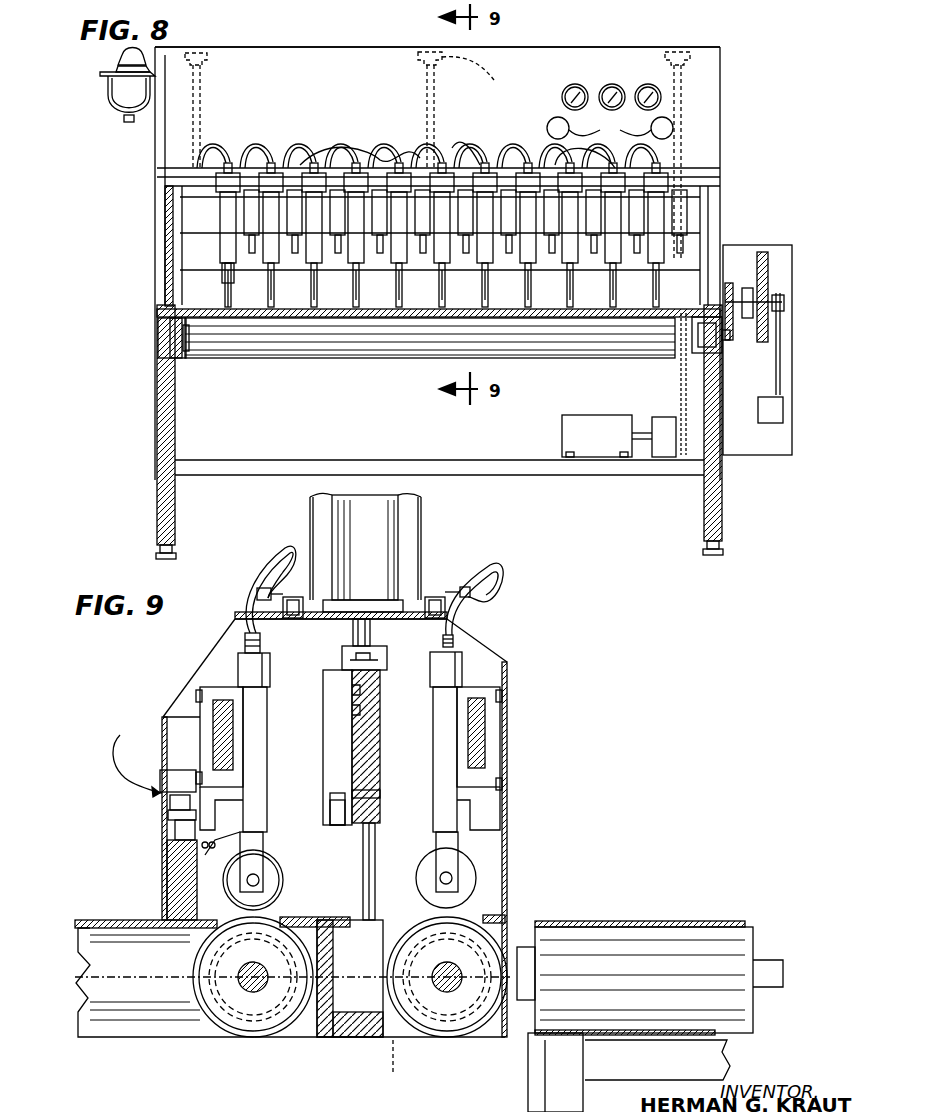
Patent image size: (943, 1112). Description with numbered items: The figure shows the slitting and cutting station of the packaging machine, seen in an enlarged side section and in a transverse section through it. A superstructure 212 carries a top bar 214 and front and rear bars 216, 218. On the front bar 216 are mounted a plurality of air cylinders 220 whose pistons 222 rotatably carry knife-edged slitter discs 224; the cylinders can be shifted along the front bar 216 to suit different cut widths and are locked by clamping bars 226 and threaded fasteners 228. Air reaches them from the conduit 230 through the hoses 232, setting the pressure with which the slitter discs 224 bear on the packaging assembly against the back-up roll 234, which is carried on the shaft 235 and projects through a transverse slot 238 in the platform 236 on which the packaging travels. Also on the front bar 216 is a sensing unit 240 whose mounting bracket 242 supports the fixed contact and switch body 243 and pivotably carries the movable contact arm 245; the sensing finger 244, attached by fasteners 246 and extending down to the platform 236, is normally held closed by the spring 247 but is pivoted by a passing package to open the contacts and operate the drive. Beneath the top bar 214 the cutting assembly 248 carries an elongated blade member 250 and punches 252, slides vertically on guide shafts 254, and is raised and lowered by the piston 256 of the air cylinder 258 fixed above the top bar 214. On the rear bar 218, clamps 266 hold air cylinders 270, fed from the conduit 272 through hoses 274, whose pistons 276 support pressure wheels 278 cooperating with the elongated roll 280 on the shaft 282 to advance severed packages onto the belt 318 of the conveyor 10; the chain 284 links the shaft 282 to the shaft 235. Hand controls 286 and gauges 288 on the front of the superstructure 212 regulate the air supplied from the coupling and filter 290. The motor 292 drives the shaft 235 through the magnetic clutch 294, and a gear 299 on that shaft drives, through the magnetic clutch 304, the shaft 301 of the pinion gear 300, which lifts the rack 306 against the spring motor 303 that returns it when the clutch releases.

In FIG. 9, the conveyor 10 is at (598, 920).
In FIG. 8, the superstructure 212 is at (724, 125).
In FIG. 9, the superstructure 212 is at (505, 662).
In FIG. 9, the top bar 214 is at (430, 598).
In FIG. 9, the front bar 216 is at (213, 718).
In FIG. 9, the rear bar 218 is at (490, 735).
In FIG. 8, the air cylinders 220 is at (224, 248).
In FIG. 9, the air cylinders 220 is at (238, 668).
In FIG. 8, the pistons 222 is at (226, 282).
In FIG. 9, the pistons 222 is at (262, 860).
In FIG. 8, the slitter discs 224 is at (232, 305).
In FIG. 9, the slitter discs 224 is at (265, 875).
In FIG. 9, the clamping bars 226 is at (200, 738).
In FIG. 9, the threaded fasteners 228 is at (198, 692).
In FIG. 9, the conduit 230 is at (290, 620).
In FIG. 8, the hoses 232 is at (226, 160).
In FIG. 9, the hoses 232 is at (250, 565).
In FIG. 8, the back-up roll 234 is at (572, 358).
In FIG. 9, the back-up roll 234 is at (246, 1035).
In FIG. 8, the shaft 235 is at (692, 352).
In FIG. 9, the shaft 235 is at (245, 990).
In FIG. 9, the platform 236 is at (92, 920).
In FIG. 9, the transverse slot 238 is at (288, 925).
In FIG. 9, the sensing unit 240 is at (150, 795).
In FIG. 9, the mounting bracket 242 is at (180, 805).
In FIG. 9, the fixed contact and switch body 243 is at (182, 812).
In FIG. 9, the sensing finger 244 is at (210, 846).
In FIG. 9, the movable contact arm 245 is at (195, 855).
In FIG. 9, the fasteners 246 is at (205, 848).
In FIG. 9, the spring 247 is at (185, 826).
In FIG. 9, the cutting assembly 248 is at (332, 745).
In FIG. 9, the blade member 250 is at (362, 815).
In FIG. 9, the punches 252 is at (335, 825).
In FIG. 9, the guide shafts 254 is at (363, 843).
In FIG. 9, the piston 256 is at (372, 636).
In FIG. 9, the air cylinder 258 is at (398, 537).
In FIG. 9, the clamps 266 is at (490, 752).
In FIG. 9, the air cylinders 270 is at (463, 678).
In FIG. 9, the conduit 272 is at (470, 587).
In FIG. 9, the hoses 274 is at (500, 582).
In FIG. 9, the pistons 276 is at (458, 848).
In FIG. 9, the pressure wheels 278 is at (476, 880).
In FIG. 9, the elongated roll 280 is at (498, 925).
In FIG. 9, the shaft 282 is at (450, 990).
In FIG. 9, the chain 284 is at (380, 1069).
In FIG. 8, the hand controls 286 is at (610, 128).
In FIG. 8, the gauges 288 is at (577, 84).
In FIG. 9, the gauges 288 is at (502, 783).
In FIG. 8, the coupling and filter 290 is at (110, 98).
In FIG. 8, the motor 292 is at (562, 428).
In FIG. 8, the magnetic clutch 294 is at (660, 450).
In FIG. 8, the gear 299 is at (730, 340).
In FIG. 8, the pinion gear 300 is at (752, 293).
In FIG. 8, the shaft 301 is at (728, 284).
In FIG. 8, the spring motor 303 is at (780, 422).
In FIG. 8, the magnetic clutch 304 is at (745, 318).
In FIG. 8, the rack 306 is at (763, 252).
In FIG. 9, the belt 318 is at (696, 921).